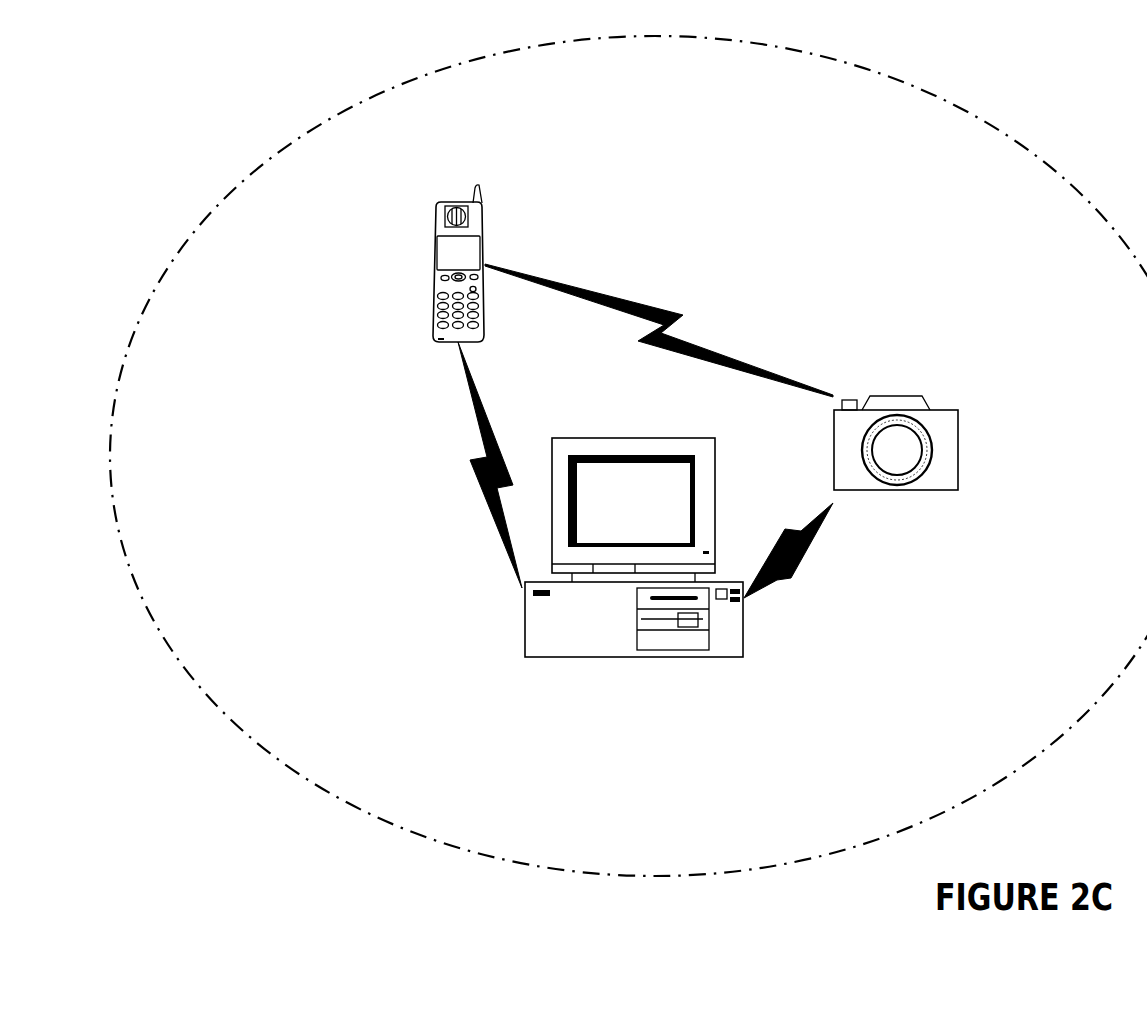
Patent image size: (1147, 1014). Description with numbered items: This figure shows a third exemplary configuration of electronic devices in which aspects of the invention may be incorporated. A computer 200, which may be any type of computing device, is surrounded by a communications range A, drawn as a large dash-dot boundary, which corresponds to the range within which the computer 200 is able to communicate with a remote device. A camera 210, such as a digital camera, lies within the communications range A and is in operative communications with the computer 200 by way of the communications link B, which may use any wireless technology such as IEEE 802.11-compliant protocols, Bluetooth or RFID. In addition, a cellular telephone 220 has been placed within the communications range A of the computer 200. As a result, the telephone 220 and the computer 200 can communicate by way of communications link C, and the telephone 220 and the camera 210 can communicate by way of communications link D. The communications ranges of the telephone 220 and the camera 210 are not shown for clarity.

The computer 200 is at (635, 438).
The camera 210 is at (902, 394).
The cellular telephone 220 is at (483, 184).
The communications range A is at (1017, 140).
The communications link B is at (807, 553).
The communications link C is at (476, 483).
The communications link D is at (647, 308).